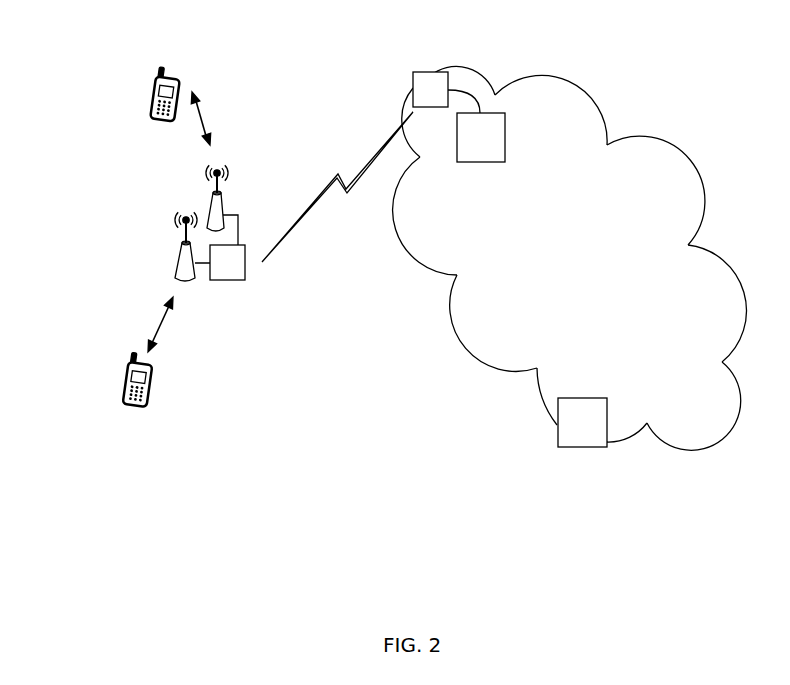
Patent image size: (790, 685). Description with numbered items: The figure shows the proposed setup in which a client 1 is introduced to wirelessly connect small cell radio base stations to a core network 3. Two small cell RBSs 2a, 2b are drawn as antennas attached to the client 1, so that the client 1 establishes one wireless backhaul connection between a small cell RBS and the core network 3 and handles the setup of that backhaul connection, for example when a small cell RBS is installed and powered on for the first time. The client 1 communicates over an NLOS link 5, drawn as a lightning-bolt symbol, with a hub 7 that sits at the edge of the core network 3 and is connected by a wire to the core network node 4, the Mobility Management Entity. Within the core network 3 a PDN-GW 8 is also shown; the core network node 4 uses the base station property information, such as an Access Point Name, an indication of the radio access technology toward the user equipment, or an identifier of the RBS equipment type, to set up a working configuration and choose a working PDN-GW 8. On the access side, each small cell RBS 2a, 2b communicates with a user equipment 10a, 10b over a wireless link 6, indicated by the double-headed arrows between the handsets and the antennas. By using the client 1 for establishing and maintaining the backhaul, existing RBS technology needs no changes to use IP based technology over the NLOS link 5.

The client 1 is at (220, 247).
The small cell RBS 2a is at (219, 194).
The small cell RBS 2b is at (177, 265).
The core network 3 is at (570, 258).
The core network node 4 is at (476, 126).
The NLOS link 5 is at (350, 148).
The wireless link 6 is at (228, 107).
The hub 7 is at (430, 89).
The PDN-GW 8 is at (582, 422).
The user equipment 10a is at (154, 73).
The user equipment 10b is at (126, 360).